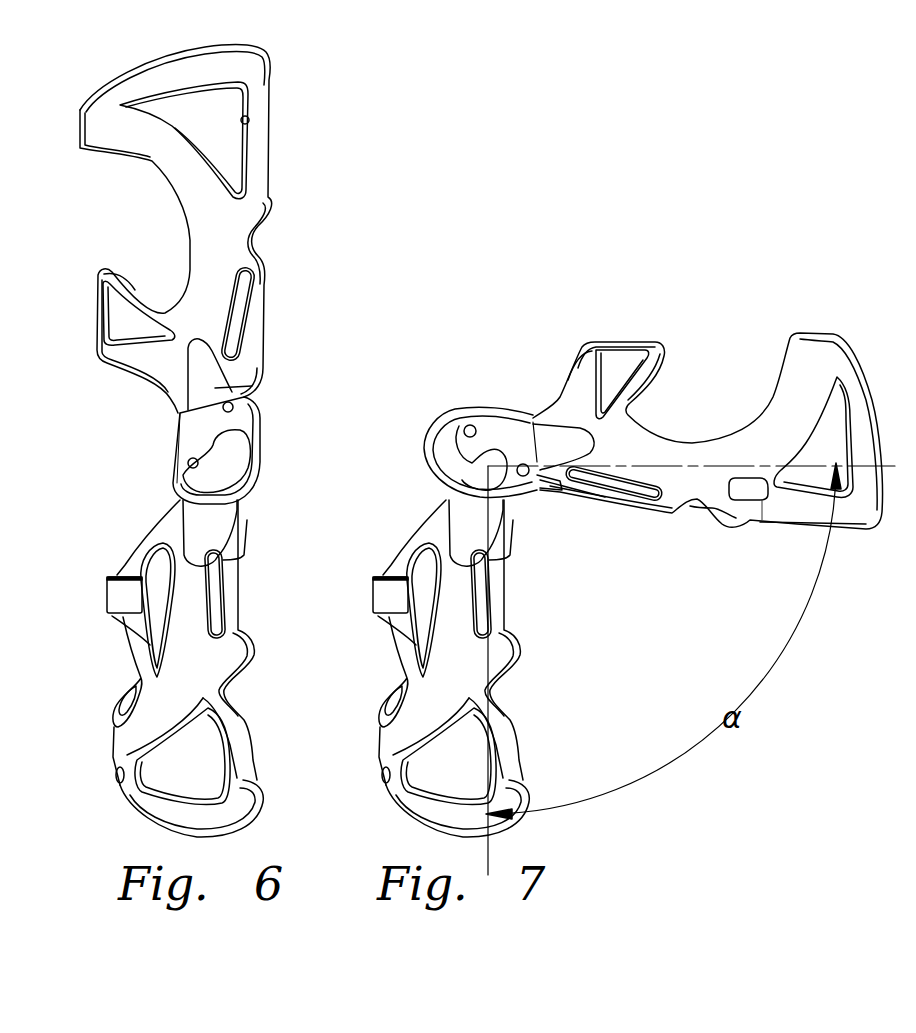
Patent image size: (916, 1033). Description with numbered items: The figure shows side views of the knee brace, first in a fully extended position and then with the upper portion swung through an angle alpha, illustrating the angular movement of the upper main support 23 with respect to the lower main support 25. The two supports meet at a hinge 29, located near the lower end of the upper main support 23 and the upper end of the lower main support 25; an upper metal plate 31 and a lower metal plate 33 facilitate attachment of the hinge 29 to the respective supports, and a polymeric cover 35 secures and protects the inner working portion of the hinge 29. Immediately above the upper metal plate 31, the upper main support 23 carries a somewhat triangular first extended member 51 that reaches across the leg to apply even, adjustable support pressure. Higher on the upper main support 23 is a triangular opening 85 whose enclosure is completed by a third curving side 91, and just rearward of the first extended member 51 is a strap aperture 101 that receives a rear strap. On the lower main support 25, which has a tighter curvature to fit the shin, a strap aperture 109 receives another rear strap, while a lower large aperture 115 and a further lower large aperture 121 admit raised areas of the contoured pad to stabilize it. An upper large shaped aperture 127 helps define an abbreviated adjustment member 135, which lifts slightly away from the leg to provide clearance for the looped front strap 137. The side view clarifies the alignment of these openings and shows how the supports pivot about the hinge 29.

In FIG. 6, the upper main support 23 is at (286, 215).
In FIG. 7, the upper main support 23 is at (708, 431).
In FIG. 6, the lower main support 25 is at (252, 610).
In FIG. 7, the lower main support 25 is at (464, 662).
In FIG. 6, the hinge 29 is at (173, 462).
In FIG. 7, the hinge 29 is at (461, 416).
In FIG. 6, the upper metal plate 31 is at (217, 387).
In FIG. 7, the upper metal plate 31 is at (569, 460).
In FIG. 6, the lower metal plate 33 is at (220, 527).
In FIG. 7, the lower metal plate 33 is at (476, 533).
In FIG. 6, the polymeric cover 35 is at (243, 447).
In FIG. 7, the polymeric cover 35 is at (497, 455).
In FIG. 6, the first extended member 51 is at (97, 312).
In FIG. 7, the first extended member 51 is at (628, 342).
In FIG. 6, the opening 85 is at (219, 155).
In FIG. 7, the opening 85 is at (817, 493).
In FIG. 6, the third curving side 91 is at (249, 117).
In FIG. 7, the third curving side 91 is at (762, 470).
In FIG. 6, the strap aperture 101 is at (238, 295).
In FIG. 7, the strap aperture 101 is at (614, 483).
In FIG. 6, the strap aperture 109 is at (220, 581).
In FIG. 7, the strap aperture 109 is at (520, 594).
In FIG. 6, the lower large aperture 115 is at (232, 747).
In FIG. 7, the lower large aperture 115 is at (496, 751).
In FIG. 6, the lower large aperture 121 is at (160, 797).
In FIG. 7, the lower large aperture 121 is at (429, 809).
In FIG. 6, the upper large shaped aperture 127 is at (167, 577).
In FIG. 7, the upper large shaped aperture 127 is at (405, 581).
In FIG. 7, the abbreviated adjustment member 135 is at (375, 627).
In FIG. 6, the front strap 137 is at (107, 600).